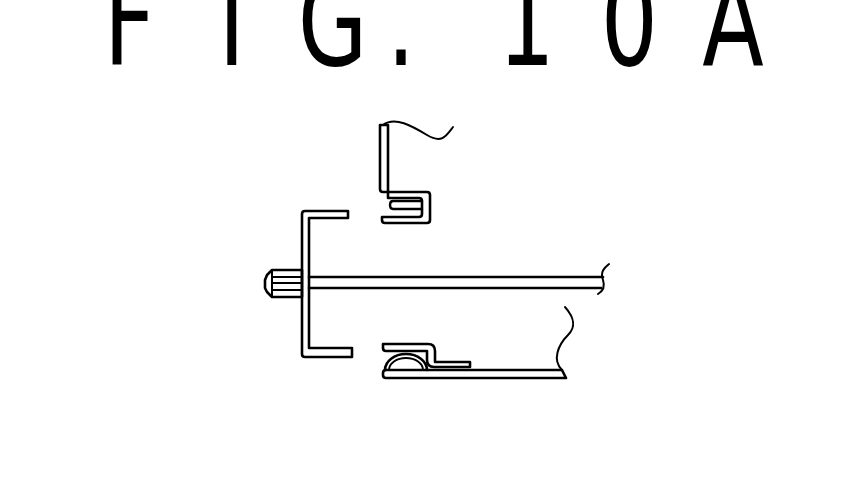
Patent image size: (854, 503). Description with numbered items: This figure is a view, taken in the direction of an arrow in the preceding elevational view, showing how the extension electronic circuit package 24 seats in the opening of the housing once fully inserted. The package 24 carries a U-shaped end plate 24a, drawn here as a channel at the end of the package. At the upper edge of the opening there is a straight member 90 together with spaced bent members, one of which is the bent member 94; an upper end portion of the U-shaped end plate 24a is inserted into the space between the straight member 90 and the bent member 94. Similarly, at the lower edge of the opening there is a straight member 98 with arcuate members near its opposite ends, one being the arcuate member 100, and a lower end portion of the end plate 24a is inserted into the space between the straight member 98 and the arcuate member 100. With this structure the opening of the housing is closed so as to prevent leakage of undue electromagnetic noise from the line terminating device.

The extension electronic circuit package 24 is at (570, 277).
The U-shaped end plate 24a is at (303, 327).
The straight member 90 is at (402, 225).
The bent member 94 is at (388, 205).
The straight member 98 is at (411, 344).
The arcuate member 100 is at (405, 360).